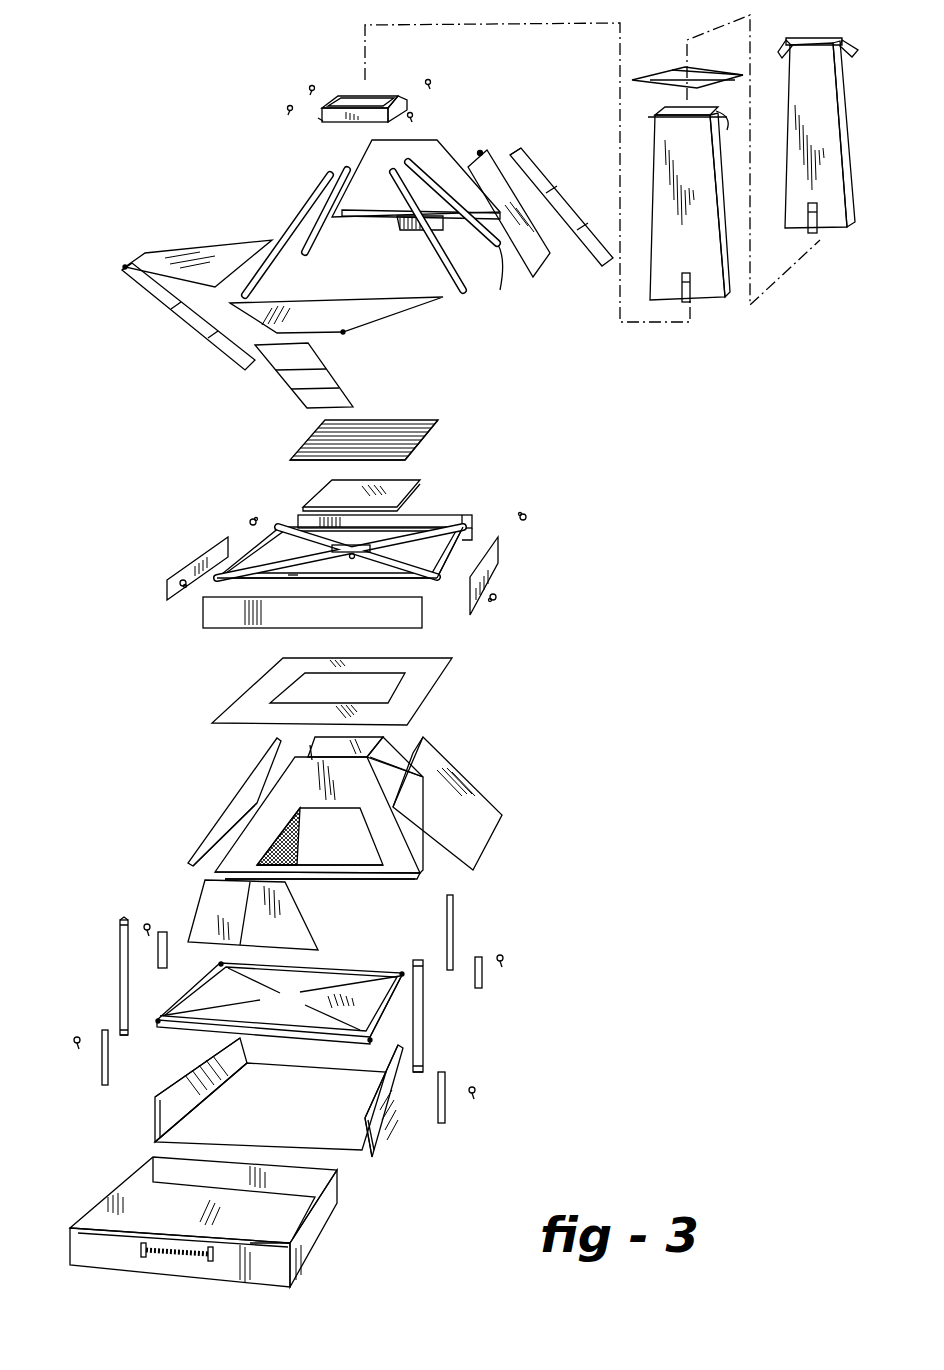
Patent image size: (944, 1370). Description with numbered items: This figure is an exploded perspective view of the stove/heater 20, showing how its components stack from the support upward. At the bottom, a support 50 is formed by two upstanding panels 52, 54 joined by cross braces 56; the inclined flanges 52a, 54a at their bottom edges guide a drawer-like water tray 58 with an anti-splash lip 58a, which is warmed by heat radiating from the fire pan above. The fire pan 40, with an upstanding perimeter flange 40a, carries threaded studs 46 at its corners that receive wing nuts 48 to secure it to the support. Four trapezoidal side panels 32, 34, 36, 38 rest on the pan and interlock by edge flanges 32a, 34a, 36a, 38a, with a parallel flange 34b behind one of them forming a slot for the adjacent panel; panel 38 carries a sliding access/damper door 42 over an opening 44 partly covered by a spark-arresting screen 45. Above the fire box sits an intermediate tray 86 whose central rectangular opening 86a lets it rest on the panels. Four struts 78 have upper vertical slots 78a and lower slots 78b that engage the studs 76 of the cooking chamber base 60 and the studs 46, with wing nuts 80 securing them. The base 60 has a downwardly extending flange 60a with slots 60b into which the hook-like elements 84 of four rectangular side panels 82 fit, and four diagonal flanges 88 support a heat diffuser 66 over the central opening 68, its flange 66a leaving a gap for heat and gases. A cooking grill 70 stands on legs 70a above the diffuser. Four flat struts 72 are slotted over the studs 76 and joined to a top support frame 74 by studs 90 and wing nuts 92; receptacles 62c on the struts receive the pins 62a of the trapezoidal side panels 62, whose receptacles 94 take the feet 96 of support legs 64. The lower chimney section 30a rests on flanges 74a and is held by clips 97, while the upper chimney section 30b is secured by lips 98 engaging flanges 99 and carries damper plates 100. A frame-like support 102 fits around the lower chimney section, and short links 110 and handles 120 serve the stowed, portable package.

The stove/heater 20 is at (607, 622).
The lower chimney section 30a is at (708, 257).
The upper chimney section 30b is at (833, 224).
The side panel 32 is at (250, 773).
The flange 32a is at (230, 797).
The side panel 34 is at (417, 797).
The flange 34a is at (338, 768).
The flange 34b is at (342, 769).
The side panel 36 is at (460, 768).
The flange 36a is at (423, 738).
The side panel 38 is at (303, 793).
The flange 38a is at (420, 860).
The fire pan 40 is at (317, 980).
The upstanding flange 40a is at (390, 1012).
The access/damper door 42 is at (290, 913).
The opening 44 is at (373, 858).
The spark-arresting screen 45 is at (293, 843).
The threaded studs 46 is at (372, 1042).
The wing nuts 48 is at (474, 1088).
The support 50 is at (407, 1125).
The upstanding panel 52 is at (215, 1075).
The inclined flange 52a is at (197, 1118).
The upstanding panel 54 is at (382, 1137).
The inclined flange 54a is at (364, 1157).
The cross braces 56 is at (268, 1145).
The water tray 58 is at (318, 1225).
The anti-splash lip 58a is at (273, 1243).
The base 60 is at (265, 543).
The downwardly extending flange 60a is at (455, 555).
The slots 60b is at (417, 577).
The side panels 62 is at (545, 249).
The pins 62a is at (535, 278).
The receptacles 62c is at (468, 290).
The support legs 64 is at (235, 364).
The heat diffuser 66 is at (410, 480).
The flange 66a is at (398, 503).
The central opening 68 is at (350, 558).
The cooking grill 70 is at (383, 420).
The legs 70a is at (413, 458).
The struts 72 is at (443, 253).
The top support frame 74 is at (400, 103).
The flanges 74a is at (382, 97).
The threaded stud 76 is at (445, 580).
The struts 78 is at (423, 997).
The vertical slot 78a is at (448, 897).
The slots 78b is at (421, 1072).
The wing nuts 80 is at (496, 597).
The side panels 82 is at (498, 567).
The hook-like elements 84 is at (465, 523).
The intermediate tray 86 is at (452, 665).
The central rectangular opening 86a is at (293, 685).
The diagonal flanges 88 is at (293, 577).
The threaded studs 90 is at (323, 115).
The wing nuts 92 is at (430, 82).
The receptacles 94 is at (344, 333).
The feet 96 is at (125, 280).
The clips 97 is at (688, 303).
The lips 98 is at (808, 230).
The flanges 99 is at (690, 117).
The damper plates 100 is at (792, 42).
The frame-like support 102 is at (655, 70).
The links 110 is at (445, 1108).
The handles 120 is at (152, 1257).